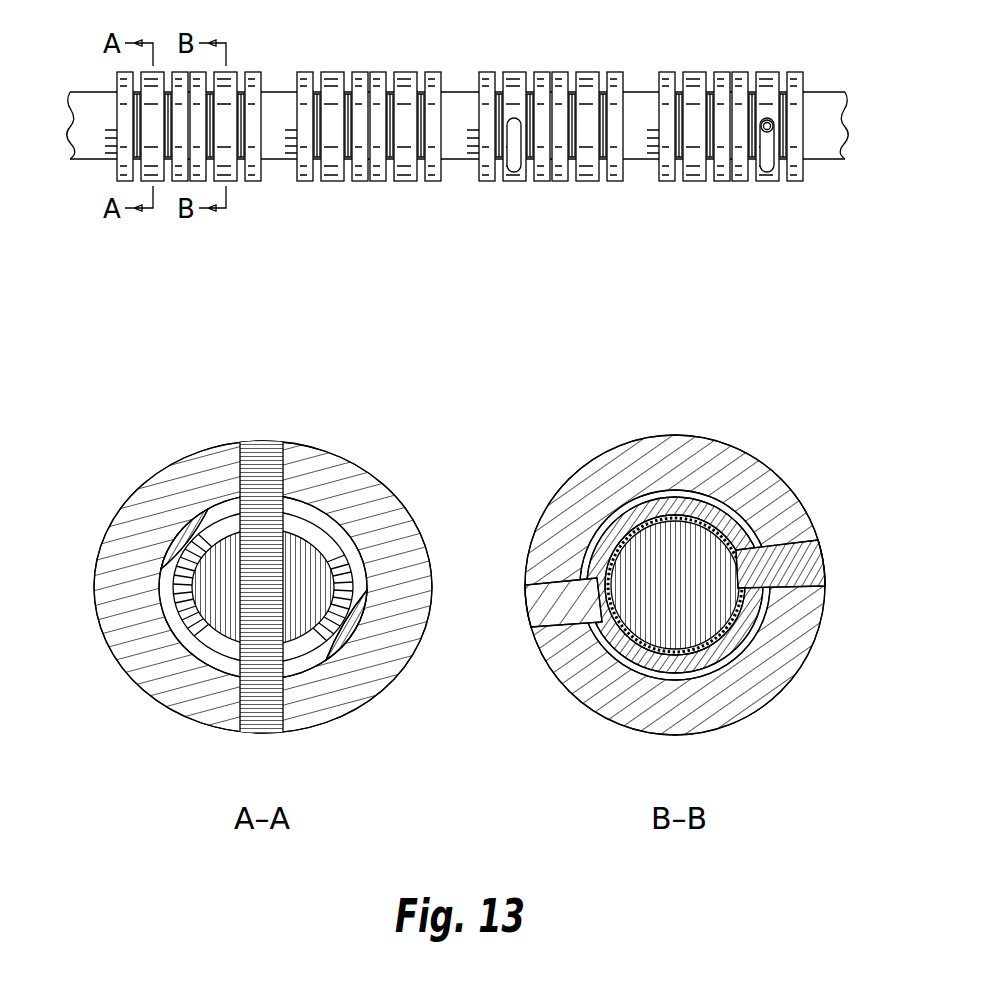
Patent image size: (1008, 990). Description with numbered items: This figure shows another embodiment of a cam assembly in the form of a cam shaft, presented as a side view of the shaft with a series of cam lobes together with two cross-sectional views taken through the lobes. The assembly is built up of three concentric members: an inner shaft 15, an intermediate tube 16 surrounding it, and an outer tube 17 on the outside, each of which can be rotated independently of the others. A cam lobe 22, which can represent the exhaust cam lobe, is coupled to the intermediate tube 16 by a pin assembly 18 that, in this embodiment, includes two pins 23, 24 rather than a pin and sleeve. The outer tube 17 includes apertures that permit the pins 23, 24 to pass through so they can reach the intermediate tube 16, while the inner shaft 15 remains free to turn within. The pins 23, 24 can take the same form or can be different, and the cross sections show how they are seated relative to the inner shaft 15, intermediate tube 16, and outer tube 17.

The inner shaft 15 is at (193, 520).
The intermediate tube 16 is at (183, 578).
The outer tube 17 is at (180, 635).
The pin assembly 18 is at (759, 416).
The cam lobe 22 is at (110, 602).
The pin 23 is at (800, 542).
The pin 24 is at (567, 597).